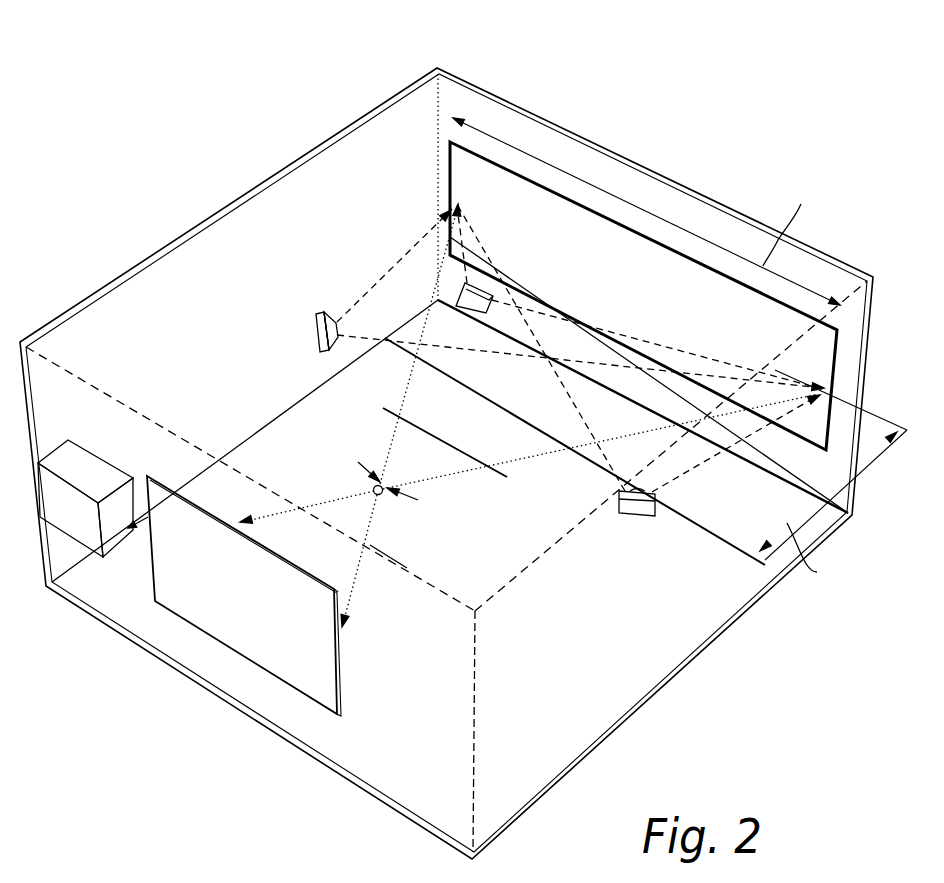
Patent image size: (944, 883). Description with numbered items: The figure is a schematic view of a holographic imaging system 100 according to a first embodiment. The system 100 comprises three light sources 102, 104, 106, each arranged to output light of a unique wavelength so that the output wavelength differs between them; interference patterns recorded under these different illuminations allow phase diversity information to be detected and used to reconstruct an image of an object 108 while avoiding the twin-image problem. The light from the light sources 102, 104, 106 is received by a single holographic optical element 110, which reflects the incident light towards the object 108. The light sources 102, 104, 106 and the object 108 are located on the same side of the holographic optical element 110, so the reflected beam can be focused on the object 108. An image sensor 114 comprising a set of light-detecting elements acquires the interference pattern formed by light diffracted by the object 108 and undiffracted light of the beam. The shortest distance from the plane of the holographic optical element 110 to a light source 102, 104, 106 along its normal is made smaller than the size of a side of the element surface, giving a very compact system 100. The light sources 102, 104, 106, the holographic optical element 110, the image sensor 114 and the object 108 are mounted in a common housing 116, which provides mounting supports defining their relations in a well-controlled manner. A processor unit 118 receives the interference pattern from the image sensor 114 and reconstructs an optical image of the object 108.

The system 100 is at (463, 444).
The light source 102 is at (315, 329).
The light source 104 is at (472, 308).
The light source 106 is at (645, 515).
The object 108 is at (383, 494).
The holographic optical element 110 is at (721, 291).
The image sensor 114 is at (237, 623).
The common housing 116 is at (330, 768).
The processor unit 118 is at (97, 477).